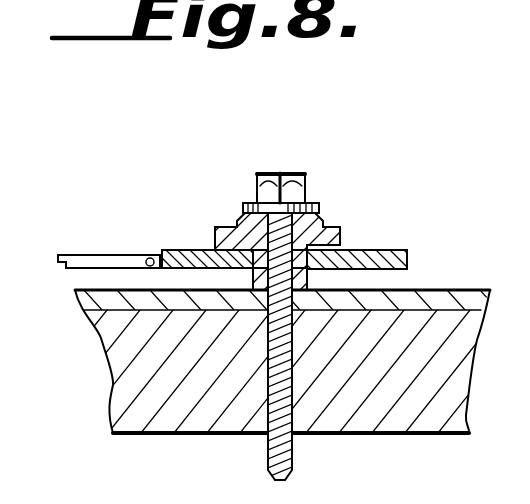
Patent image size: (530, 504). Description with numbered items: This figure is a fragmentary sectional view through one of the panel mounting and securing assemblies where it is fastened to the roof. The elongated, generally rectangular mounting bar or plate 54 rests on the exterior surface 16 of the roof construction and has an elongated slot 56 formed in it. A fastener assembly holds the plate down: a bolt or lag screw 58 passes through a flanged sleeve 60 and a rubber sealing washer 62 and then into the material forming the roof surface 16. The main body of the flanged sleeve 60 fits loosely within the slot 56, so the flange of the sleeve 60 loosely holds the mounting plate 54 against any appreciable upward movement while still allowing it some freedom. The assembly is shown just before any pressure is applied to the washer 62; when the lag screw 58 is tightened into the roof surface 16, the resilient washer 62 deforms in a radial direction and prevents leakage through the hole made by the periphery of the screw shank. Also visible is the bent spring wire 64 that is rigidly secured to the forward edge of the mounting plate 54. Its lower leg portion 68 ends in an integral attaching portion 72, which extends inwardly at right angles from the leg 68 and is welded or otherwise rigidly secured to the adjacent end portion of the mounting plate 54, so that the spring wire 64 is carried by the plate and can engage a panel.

The exterior surface of the roof construction 16 is at (357, 422).
The mounting bar or plate 54 is at (401, 238).
The elongated slot 56 is at (212, 250).
The bolt or lag screw 58 is at (292, 190).
The flanged sleeve 60 is at (341, 235).
The rubber sealing washer 62 is at (307, 281).
The bent spring wire 64 is at (78, 277).
The lower leg portion 68 is at (100, 265).
The attaching portion 72 is at (134, 267).